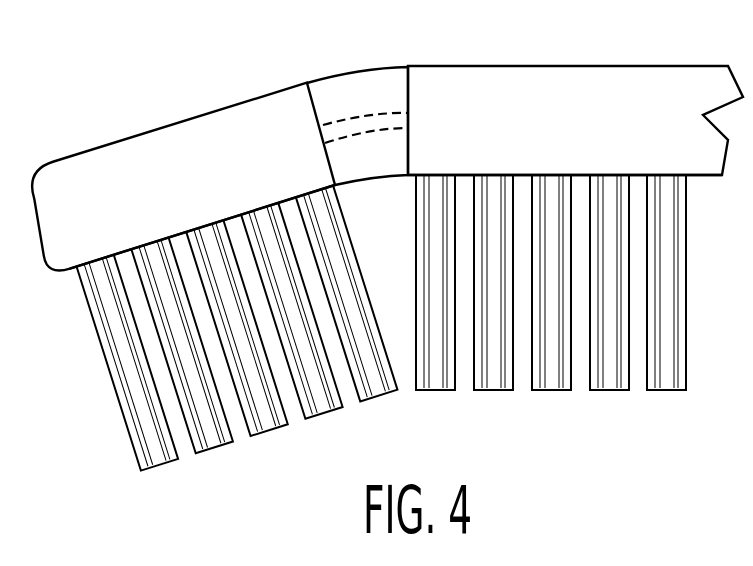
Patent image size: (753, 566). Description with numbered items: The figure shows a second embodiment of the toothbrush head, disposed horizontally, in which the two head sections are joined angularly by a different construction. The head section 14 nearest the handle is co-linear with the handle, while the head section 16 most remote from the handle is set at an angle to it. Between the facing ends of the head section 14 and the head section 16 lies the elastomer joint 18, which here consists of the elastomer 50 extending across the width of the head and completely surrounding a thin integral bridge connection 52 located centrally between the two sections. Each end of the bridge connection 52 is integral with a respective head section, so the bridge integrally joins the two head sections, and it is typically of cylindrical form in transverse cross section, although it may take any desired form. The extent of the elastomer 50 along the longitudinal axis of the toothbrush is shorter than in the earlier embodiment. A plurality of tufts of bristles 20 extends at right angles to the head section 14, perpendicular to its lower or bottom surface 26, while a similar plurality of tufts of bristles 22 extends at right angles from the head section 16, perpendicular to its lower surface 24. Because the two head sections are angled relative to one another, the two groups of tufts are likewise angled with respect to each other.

The head section 14 is at (580, 132).
The head section 16 is at (181, 190).
The elastomer joint 18 is at (380, 138).
The tufts of bristles 20 is at (610, 377).
The tufts of bristles 22 is at (160, 468).
The lower surface 24 is at (173, 238).
The lower surface 26 is at (633, 178).
The elastomer 50 is at (338, 93).
The bridge connection 52 is at (377, 112).